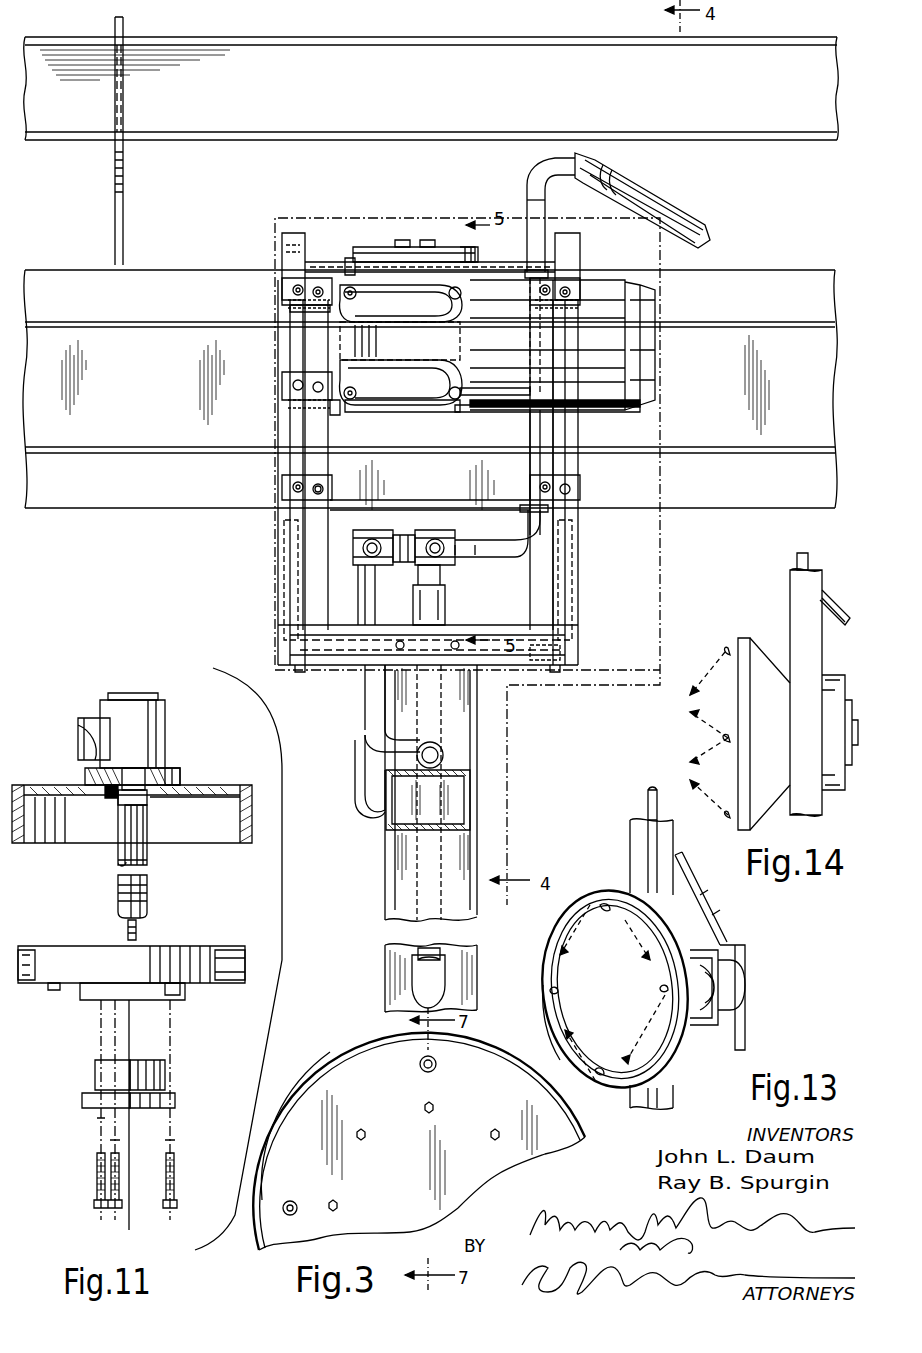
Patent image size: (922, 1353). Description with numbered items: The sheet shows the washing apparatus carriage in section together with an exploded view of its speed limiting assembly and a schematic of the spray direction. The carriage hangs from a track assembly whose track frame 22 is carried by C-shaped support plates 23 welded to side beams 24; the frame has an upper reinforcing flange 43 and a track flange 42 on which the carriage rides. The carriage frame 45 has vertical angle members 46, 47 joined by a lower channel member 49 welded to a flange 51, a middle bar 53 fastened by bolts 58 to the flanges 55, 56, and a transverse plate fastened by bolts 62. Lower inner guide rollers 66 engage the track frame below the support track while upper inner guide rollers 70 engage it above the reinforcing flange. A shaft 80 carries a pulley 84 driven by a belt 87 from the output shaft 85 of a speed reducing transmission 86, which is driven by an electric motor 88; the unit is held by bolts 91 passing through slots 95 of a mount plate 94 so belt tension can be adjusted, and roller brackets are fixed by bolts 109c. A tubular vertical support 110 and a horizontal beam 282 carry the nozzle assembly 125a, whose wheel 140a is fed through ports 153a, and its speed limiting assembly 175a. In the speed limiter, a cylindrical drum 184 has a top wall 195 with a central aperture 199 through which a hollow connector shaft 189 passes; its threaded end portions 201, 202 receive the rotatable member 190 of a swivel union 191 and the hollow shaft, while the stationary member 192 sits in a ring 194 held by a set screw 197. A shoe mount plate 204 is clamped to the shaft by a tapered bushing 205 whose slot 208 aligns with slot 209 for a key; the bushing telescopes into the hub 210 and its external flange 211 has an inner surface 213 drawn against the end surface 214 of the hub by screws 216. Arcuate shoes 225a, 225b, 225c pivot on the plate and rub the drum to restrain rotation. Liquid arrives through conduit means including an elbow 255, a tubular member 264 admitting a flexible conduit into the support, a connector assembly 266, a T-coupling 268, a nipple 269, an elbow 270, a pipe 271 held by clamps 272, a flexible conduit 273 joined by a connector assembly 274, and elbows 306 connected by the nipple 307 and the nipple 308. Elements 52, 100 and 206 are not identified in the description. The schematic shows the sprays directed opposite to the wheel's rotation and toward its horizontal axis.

In FIG. 3, the track frame 22 is at (772, 505).
In FIG. 3, the C-shaped support plates 23 is at (123, 210).
In FIG. 3, the side beams 24 is at (778, 122).
In FIG. 3, the track flange 42 is at (725, 453).
In FIG. 3, the upper reinforcing flange 43 is at (736, 325).
In FIG. 3, the frame 45 is at (582, 628).
In FIG. 3, the vertical angle member 46 is at (290, 572).
In FIG. 3, the vertical angle member 47 is at (562, 585).
In FIG. 3, the lower channel member 49 is at (540, 655).
In FIG. 3, the flange 51 is at (302, 615).
In FIG. 3, the right channel 52 is at (560, 555).
In FIG. 3, the middle bar 53 is at (405, 480).
In FIG. 3, the flange 55 is at (290, 515).
In FIG. 3, the flange 56 is at (578, 516).
In FIG. 3, the bolts 58 is at (326, 487).
In FIG. 3, the bolts 62 is at (300, 305).
In FIG. 3, the lower inner guide rollers 66 is at (283, 487).
In FIG. 3, the upper inner guide rollers 70 is at (282, 284).
In FIG. 3, the shaft 80 is at (432, 248).
In FIG. 3, the pulley 84 is at (460, 262).
In FIG. 3, the output shaft 85 is at (395, 250).
In FIG. 3, the speed reducing transmission 86 is at (345, 340).
In FIG. 3, the belt 87 is at (358, 262).
In FIG. 3, the electric motor 88 is at (402, 248).
In FIG. 3, the bolts 91 is at (345, 293).
In FIG. 3, the mount plate 94 is at (368, 414).
In FIG. 3, the slots 95 is at (332, 404).
In FIG. 3, the support bracket 100 is at (310, 240).
In FIG. 3, the bolts 109c is at (292, 385).
In FIG. 3, the tubular vertical support 110 is at (477, 745).
In FIG. 3, the nozzle assembly 125a is at (350, 1038).
In FIG. 13, the nozzle assembly 125a is at (587, 890).
In FIG. 14, the nozzle assembly 125a is at (742, 640).
In FIG. 3, the wheel 140a is at (328, 1084).
In FIG. 13, the wheel 140a is at (557, 1005).
In FIG. 3, the ports 153a is at (436, 1066).
In FIG. 13, the ports 153a is at (605, 910).
In FIG. 14, the ports 153a is at (735, 808).
In FIG. 13, the speed limiting assembly 175a is at (719, 1027).
In FIG. 11, the cylindrical drum 184 is at (252, 840).
In FIG. 11, the hollow connector shaft 189 is at (146, 855).
In FIG. 11, the rotatable member 190 is at (143, 798).
In FIG. 11, the swivel union 191 is at (168, 717).
In FIG. 11, the stationary member 192 is at (165, 735).
In FIG. 11, the ring 194 is at (172, 768).
In FIG. 11, the top wall 195 is at (195, 807).
In FIG. 11, the set screw 197 is at (180, 778).
In FIG. 11, the central aperture 199 is at (114, 790).
In FIG. 11, the internally threaded end portion 201 is at (128, 778).
In FIG. 11, the internally threaded end portion 202 is at (118, 900).
In FIG. 11, the shoe mount plate 204 is at (182, 998).
In FIG. 11, the tapered bushing 205 is at (165, 1068).
In FIG. 11, the pin 206 is at (135, 935).
In FIG. 11, the slot 208 is at (145, 830).
In FIG. 11, the slot 209 is at (128, 1068).
In FIG. 11, the hub 210 is at (95, 1000).
In FIG. 11, the external flange 211 is at (175, 1100).
In FIG. 11, the inner surface 213 is at (85, 1096).
In FIG. 11, the end surface 214 is at (152, 1008).
In FIG. 11, the screws 216 is at (176, 1180).
In FIG. 11, the arcuate shoe 225a is at (86, 955).
In FIG. 11, the arcuate shoe 225b is at (245, 948).
In FIG. 11, the arcuate shoe 225c is at (30, 948).
In FIG. 11, the elbow 255 is at (86, 740).
In FIG. 3, the tubular member 264 is at (445, 975).
In FIG. 3, the connector assembly 266 is at (446, 600).
In FIG. 3, the T-coupling 268 is at (455, 525).
In FIG. 3, the nipple 269 is at (488, 560).
In FIG. 3, the elbow 270 is at (525, 542).
In FIG. 3, the pipe 271 is at (525, 420).
In FIG. 3, the clamps 272 is at (530, 272).
In FIG. 3, the flexible conduit 273 is at (683, 218).
In FIG. 3, the connector assembly 274 is at (545, 160).
In FIG. 3, the horizontal beam 282 is at (474, 810).
In FIG. 3, the elbow 306 is at (400, 526).
In FIG. 3, the nipple 307 is at (368, 530).
In FIG. 3, the nipple 308 is at (400, 562).